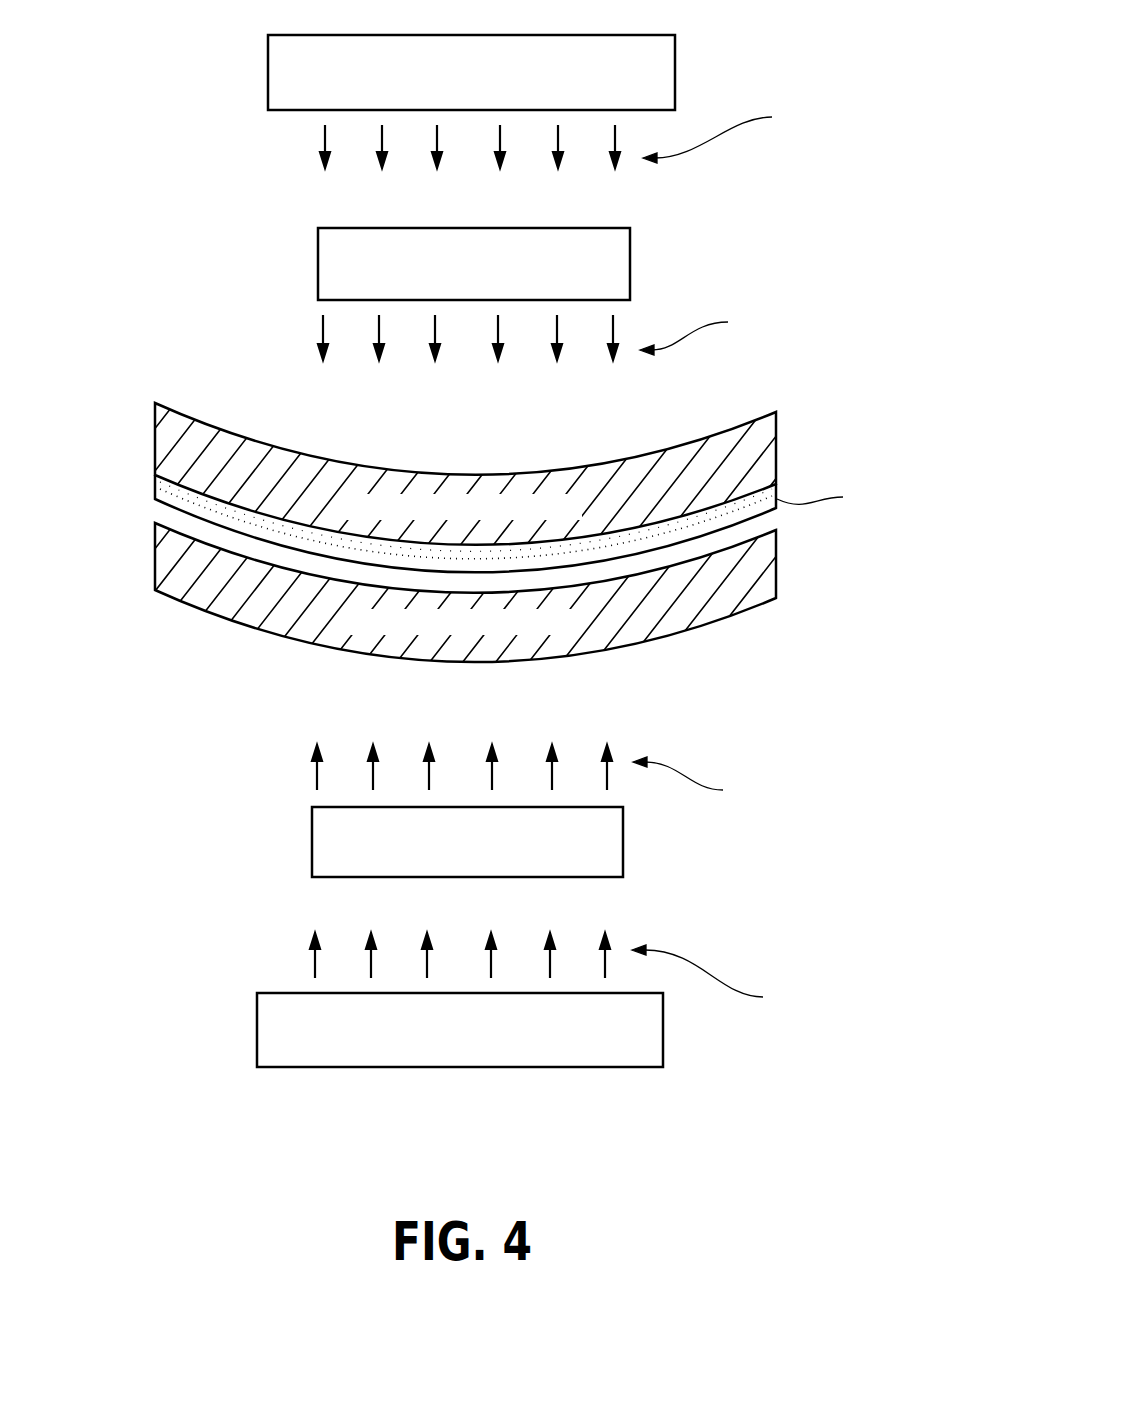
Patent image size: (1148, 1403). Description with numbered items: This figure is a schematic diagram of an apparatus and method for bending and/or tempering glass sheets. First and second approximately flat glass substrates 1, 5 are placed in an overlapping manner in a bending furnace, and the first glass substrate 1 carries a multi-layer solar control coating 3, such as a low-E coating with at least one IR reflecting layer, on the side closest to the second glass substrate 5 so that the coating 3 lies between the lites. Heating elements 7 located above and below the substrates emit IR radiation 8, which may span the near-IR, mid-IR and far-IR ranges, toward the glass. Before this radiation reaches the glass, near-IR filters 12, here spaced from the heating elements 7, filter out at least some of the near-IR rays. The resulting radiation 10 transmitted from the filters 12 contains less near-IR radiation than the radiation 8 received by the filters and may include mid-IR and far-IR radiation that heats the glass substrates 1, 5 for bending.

The first glass substrate 1 is at (170, 447).
The solar control coating 3 is at (165, 476).
The second glass substrate 5 is at (173, 563).
The heating elements 7 is at (675, 78).
The IR radiation 8 is at (305, 150).
The IR radiation transmitted from filter 10 is at (303, 340).
The near-IR filter 12 is at (318, 265).